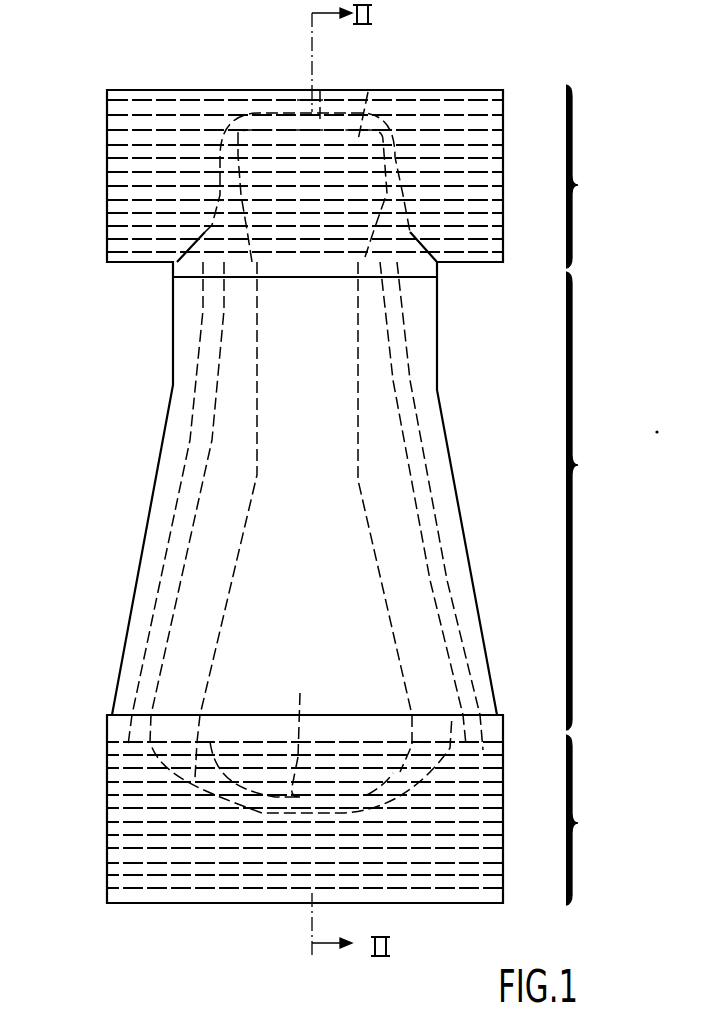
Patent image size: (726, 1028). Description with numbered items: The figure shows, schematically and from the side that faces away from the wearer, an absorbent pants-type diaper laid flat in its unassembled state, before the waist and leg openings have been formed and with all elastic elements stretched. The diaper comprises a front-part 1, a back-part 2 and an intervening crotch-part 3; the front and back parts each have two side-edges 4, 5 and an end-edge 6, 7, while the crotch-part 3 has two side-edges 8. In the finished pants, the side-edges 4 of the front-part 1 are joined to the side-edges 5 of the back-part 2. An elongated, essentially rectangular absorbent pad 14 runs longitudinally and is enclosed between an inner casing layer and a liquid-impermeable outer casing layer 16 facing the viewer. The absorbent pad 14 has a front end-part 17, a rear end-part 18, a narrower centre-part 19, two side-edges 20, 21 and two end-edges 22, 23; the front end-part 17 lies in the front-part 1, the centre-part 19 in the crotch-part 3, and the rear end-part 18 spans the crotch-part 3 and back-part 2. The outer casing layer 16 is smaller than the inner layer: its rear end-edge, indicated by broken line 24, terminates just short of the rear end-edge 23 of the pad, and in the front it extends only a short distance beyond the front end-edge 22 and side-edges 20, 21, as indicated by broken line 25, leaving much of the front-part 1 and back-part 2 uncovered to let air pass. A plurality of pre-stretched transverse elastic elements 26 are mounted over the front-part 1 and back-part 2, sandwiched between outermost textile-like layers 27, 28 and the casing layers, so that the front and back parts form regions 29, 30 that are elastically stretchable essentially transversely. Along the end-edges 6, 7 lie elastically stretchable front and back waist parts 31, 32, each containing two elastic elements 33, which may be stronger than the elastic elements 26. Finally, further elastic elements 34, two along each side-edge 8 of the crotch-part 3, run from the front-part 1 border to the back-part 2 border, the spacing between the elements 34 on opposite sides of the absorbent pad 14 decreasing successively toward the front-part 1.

The front-part 1 is at (586, 176).
The back-part 2 is at (587, 820).
The crotch-part 3 is at (587, 501).
The side-edges of the front-part 4 is at (503, 185).
The side-edges of the back-part 5 is at (503, 852).
The end-edge of the front-part 6 is at (222, 92).
The end-edge of the back-part 7 is at (113, 905).
The side-edges of the crotch-part 8 is at (440, 312).
The absorbent pad 14 is at (270, 582).
The outer casing layer 16 is at (183, 349).
The front end-part of the absorbent pad 17 is at (368, 92).
The rear end-part of the absorbent pad 18 is at (365, 655).
The centre-part of the absorbent pad 19 is at (325, 380).
The side-edge of the absorbent pad 20 is at (259, 440).
The side-edge of the absorbent pad 21 is at (393, 613).
The front end-edge of the absorbent pad 22 is at (320, 90).
The rear end-edge of the absorbent pad 23 is at (300, 715).
The rear end-edge of the outer casing layer 24 is at (132, 748).
The front edge of the outer casing layer 25 is at (173, 290).
The transverse elastic elements 26 is at (108, 885).
The front layer of textile-like material 27 is at (107, 222).
The back layer of textile-like material 28 is at (503, 876).
The elastically stretchable region of the front-part 29 is at (107, 134).
The elastically stretchable region of the back-part 30 is at (112, 792).
The front waist part 31 is at (176, 100).
The back waist part 32 is at (443, 905).
The waist elastic elements 33 is at (207, 935).
The further elastically stretchable elements 34 is at (420, 467).